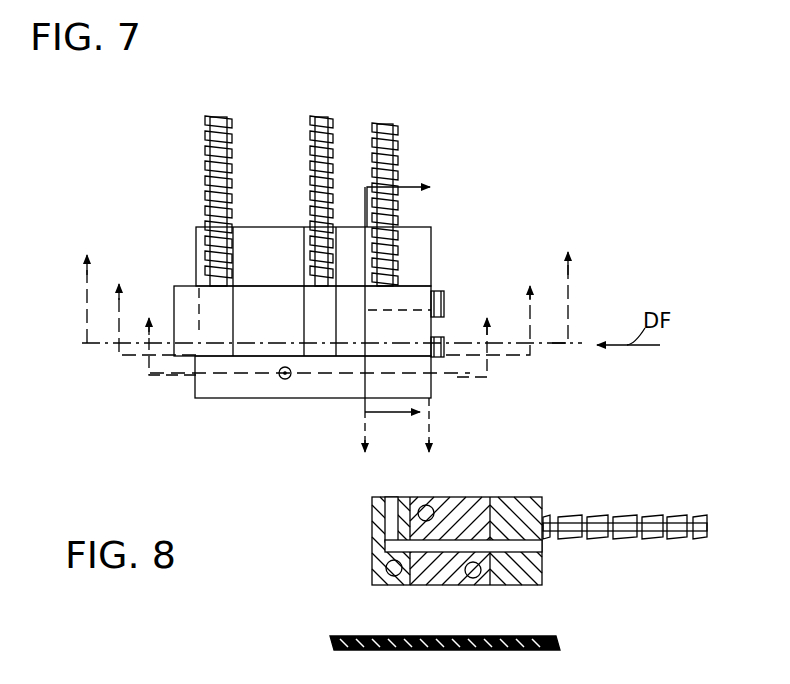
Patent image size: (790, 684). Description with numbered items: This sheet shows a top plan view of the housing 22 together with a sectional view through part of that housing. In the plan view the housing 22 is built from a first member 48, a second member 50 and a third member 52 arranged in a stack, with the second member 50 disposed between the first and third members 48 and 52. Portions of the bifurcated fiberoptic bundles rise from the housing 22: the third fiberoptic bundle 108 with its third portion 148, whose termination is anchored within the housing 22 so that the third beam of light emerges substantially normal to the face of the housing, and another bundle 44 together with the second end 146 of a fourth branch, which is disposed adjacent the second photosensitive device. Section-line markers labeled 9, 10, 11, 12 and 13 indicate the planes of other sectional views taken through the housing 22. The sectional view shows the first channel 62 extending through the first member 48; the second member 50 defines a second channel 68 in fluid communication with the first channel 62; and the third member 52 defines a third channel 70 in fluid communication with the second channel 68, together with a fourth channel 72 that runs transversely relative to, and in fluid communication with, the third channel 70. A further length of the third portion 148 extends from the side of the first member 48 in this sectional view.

In FIG. 7, the housing 22 is at (212, 405).
In FIG. 7, the rack 44 is at (313, 133).
In FIG. 7, the first member 48 is at (425, 257).
In FIG. 8, the first member 48 is at (540, 570).
In FIG. 7, the second member 50 is at (186, 292).
In FIG. 8, the second member 50 is at (478, 495).
In FIG. 7, the third member 52 is at (302, 390).
In FIG. 8, the third member 52 is at (389, 580).
In FIG. 8, the first channel 62 is at (512, 528).
In FIG. 8, the second channel 68 is at (448, 560).
In FIG. 8, the third channel 70 is at (384, 546).
In FIG. 8, the fourth channel 72 is at (385, 528).
In FIG. 7, the third fiberoptic bundle 108 is at (204, 198).
In FIG. 7, the second end of the fourth branch 146 is at (396, 149).
In FIG. 7, the third portion 148 is at (205, 142).
In FIG. 8, the third portion 148 is at (650, 535).
In FIG. 7, the section line 9- 9 is at (318, 338).
In FIG. 7, the section line 10- 10 is at (328, 308).
In FIG. 7, the section line 11- 11 is at (334, 287).
In FIG. 7, the section line 12- 12 is at (417, 307).
In FIG. 7, the section line 13- 13 is at (402, 439).